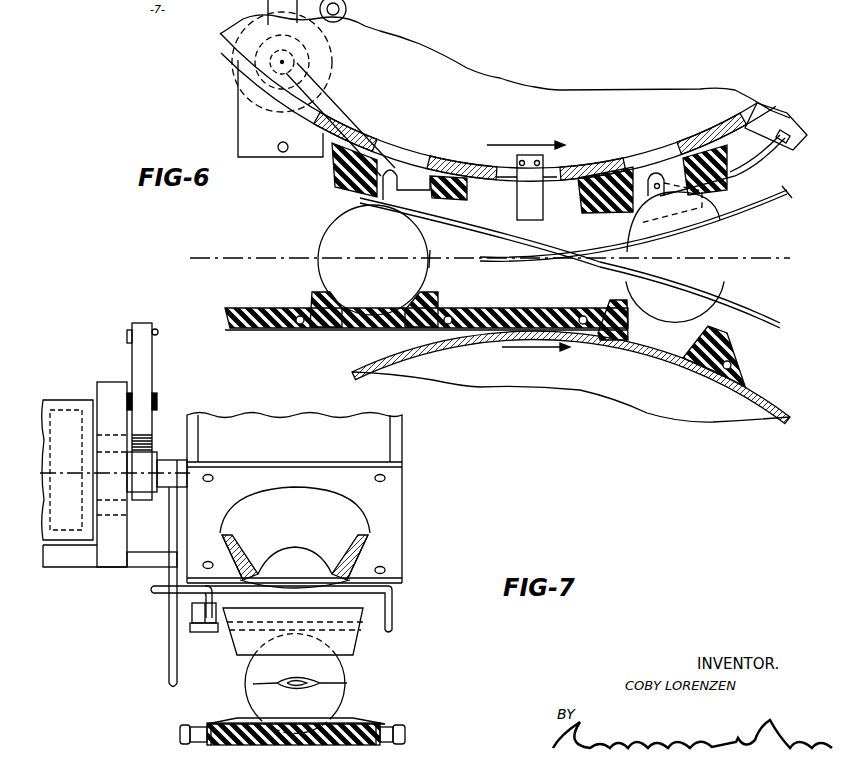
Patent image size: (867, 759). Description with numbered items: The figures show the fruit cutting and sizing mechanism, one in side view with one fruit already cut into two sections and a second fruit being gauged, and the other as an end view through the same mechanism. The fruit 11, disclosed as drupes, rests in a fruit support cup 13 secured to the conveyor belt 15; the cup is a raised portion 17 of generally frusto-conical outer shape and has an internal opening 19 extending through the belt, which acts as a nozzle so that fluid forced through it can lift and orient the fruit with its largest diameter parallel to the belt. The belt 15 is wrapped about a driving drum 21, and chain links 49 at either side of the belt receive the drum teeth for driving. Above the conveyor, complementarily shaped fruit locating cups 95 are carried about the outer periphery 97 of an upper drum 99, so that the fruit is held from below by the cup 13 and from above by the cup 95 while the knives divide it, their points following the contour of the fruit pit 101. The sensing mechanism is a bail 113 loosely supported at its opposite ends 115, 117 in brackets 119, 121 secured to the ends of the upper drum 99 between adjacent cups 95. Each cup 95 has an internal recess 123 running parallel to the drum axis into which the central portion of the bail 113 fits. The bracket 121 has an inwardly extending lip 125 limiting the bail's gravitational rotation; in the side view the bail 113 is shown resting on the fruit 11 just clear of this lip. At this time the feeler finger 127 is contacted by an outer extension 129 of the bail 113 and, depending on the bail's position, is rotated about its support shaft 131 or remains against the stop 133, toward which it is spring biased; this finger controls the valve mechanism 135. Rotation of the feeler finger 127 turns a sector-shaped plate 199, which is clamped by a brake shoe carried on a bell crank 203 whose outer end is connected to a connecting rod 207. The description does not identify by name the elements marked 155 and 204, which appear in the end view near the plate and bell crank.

In FIG. 6, the fruit 11 is at (340, 225).
In FIG. 7, the fruit 11 is at (356, 679).
In FIG. 6, the fruit support cup 13 is at (318, 294).
In FIG. 7, the fruit support cup 13 is at (368, 711).
In FIG. 6, the conveyor belt 15 is at (262, 286).
In FIG. 7, the conveyor belt 15 is at (226, 720).
In FIG. 6, the raised portion 17 is at (452, 300).
In FIG. 6, the internal opening 19 is at (372, 332).
In FIG. 6, the driving drum 21 is at (582, 395).
In FIG. 7, the chain links 49 is at (184, 727).
In FIG. 6, the fruit locating cup 95 is at (333, 170).
In FIG. 7, the fruit locating cup 95 is at (360, 523).
In FIG. 6, the outer periphery 97 is at (236, 52).
In FIG. 7, the upper drum 99 is at (403, 428).
In FIG. 6, the fruit pit 101 is at (700, 234).
In FIG. 6, the bail 113 is at (434, 222).
In FIG. 7, the bail 113 is at (395, 590).
In FIG. 7, the bail end 115 is at (395, 622).
In FIG. 7, the bail end 117 is at (190, 627).
In FIG. 7, the bracket 119 is at (396, 600).
In FIG. 6, the bracket 121 is at (517, 202).
In FIG. 7, the bracket 121 is at (193, 607).
In FIG. 6, the internal recess 123 is at (656, 175).
In FIG. 7, the internal recess 123 is at (364, 560).
In FIG. 6, the inwardly extending lip 125 is at (538, 222).
In FIG. 7, the inwardly extending lip 125 is at (208, 634).
In FIG. 6, the feeler finger 127 is at (386, 172).
In FIG. 7, the feeler finger 127 is at (168, 668).
In FIG. 7, the outer extension 129 is at (153, 586).
In FIG. 6, the support shaft 131 is at (247, 88).
In FIG. 7, the support shaft 131 is at (162, 462).
In FIG. 6, the stop 133 is at (292, 133).
In FIG. 7, the stop 133 is at (158, 538).
In FIG. 7, the valve mechanism 135 is at (52, 386).
In FIG. 7, the support block 155 is at (99, 385).
In FIG. 6, the sector-shaped plate 199 is at (320, 62).
In FIG. 7, the bell crank 203 is at (134, 362).
In FIG. 6, the roller nut 204 is at (347, 9).
In FIG. 7, the roller nut 204 is at (157, 392).
In FIG. 7, the connecting rod 207 is at (170, 322).